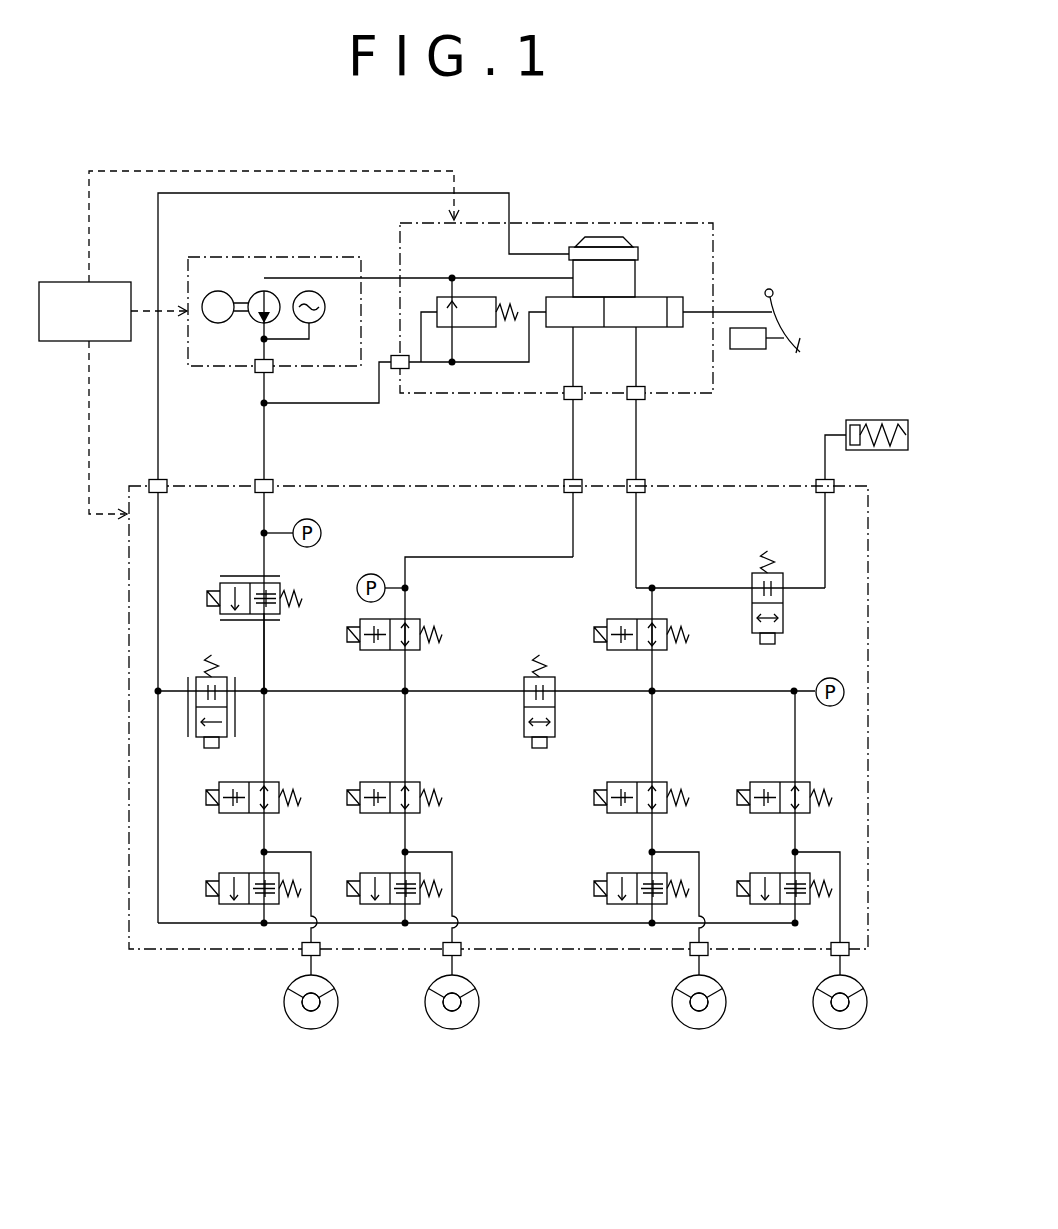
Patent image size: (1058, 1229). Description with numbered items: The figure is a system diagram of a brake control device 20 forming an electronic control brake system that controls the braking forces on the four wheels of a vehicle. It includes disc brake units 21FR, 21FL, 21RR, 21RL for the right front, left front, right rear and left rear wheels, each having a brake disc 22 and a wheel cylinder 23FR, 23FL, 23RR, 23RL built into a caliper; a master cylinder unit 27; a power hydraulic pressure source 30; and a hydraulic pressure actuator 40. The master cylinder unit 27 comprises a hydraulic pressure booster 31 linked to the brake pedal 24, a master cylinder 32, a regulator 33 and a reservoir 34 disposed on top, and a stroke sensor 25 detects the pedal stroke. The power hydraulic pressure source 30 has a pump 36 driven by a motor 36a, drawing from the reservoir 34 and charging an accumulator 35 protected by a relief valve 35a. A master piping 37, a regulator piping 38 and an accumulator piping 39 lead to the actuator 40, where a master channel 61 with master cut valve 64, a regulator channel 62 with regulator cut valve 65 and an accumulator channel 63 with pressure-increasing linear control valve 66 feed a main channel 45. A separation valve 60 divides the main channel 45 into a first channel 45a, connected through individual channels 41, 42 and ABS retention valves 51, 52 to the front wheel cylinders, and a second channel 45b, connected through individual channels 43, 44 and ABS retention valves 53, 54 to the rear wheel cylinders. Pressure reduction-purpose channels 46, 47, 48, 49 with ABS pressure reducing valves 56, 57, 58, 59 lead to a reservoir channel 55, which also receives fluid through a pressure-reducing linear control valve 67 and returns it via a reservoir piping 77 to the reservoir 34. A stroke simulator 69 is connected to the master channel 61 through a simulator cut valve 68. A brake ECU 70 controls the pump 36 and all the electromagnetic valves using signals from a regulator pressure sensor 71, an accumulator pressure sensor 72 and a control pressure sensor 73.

The brake control device 20 is at (476, 601).
The disc brake unit 21RR is at (250, 1010).
The disc brake unit 21RL is at (397, 1010).
The disc brake unit 21FR is at (640, 1010).
The disc brake unit 21FL is at (785, 1010).
The brake disc 22 is at (515, 1014).
The wheel cylinder 23RR is at (290, 978).
The wheel cylinder 23RL is at (430, 978).
The wheel cylinder 23FR is at (678, 978).
The wheel cylinder 23FL is at (818, 978).
The brake pedal 24 is at (805, 347).
The stroke sensor 25 is at (748, 350).
The master cylinder unit 27 is at (581, 298).
The power hydraulic pressure source 30 is at (274, 286).
The hydraulic pressure booster 31 is at (652, 309).
The master cylinder 32 is at (618, 328).
The regulator 33 is at (558, 328).
The reservoir 34 is at (605, 237).
The accumulator 35 is at (309, 324).
The relief valve 35a is at (472, 328).
The pump 36 is at (262, 326).
The motor 36a is at (220, 291).
The master piping 37 is at (634, 445).
The regulator piping 38 is at (571, 445).
The accumulator piping 39 is at (266, 446).
The hydraulic pressure actuator 40 is at (860, 482).
The individual channel 41 is at (657, 884).
The individual channel 42 is at (800, 884).
The individual channel 43 is at (272, 884).
The individual channel 44 is at (413, 884).
The main channel 45 is at (485, 696).
The first channel 45a is at (684, 698).
The second channel 45b is at (311, 698).
The pressure reduction-purpose channel 46 is at (645, 862).
The pressure reduction-purpose channel 47 is at (788, 862).
The pressure reduction-purpose channel 48 is at (258, 862).
The pressure reduction-purpose channel 49 is at (398, 862).
The ABS retention valve 51 is at (668, 782).
The ABS retention valve 52 is at (809, 782).
The ABS retention valve 53 is at (282, 782).
The ABS retention valve 54 is at (422, 782).
The reservoir channel 55 is at (178, 922).
The ABS pressure reducing valve 56 is at (604, 884).
The ABS pressure reducing valve 57 is at (747, 884).
The ABS pressure reducing valve 58 is at (216, 884).
The ABS pressure reducing valve 59 is at (358, 884).
The separation valve 60 is at (557, 728).
The master channel 61 is at (636, 566).
The regulator channel 62 is at (478, 557).
The accumulator channel 63 is at (266, 663).
The master cut valve 64 is at (678, 622).
The regulator cut valve 65 is at (428, 618).
The pressure-increasing linear control valve 66 is at (287, 612).
The pressure-reducing linear control valve 67 is at (207, 657).
The simulator cut valve 68 is at (786, 622).
The stroke simulator 69 is at (876, 420).
The brake ECU 70 is at (52, 282).
The regulator pressure sensor 71 is at (368, 574).
The accumulator pressure sensor 72 is at (318, 521).
The control pressure sensor 73 is at (818, 680).
The reservoir piping 77 is at (160, 421).